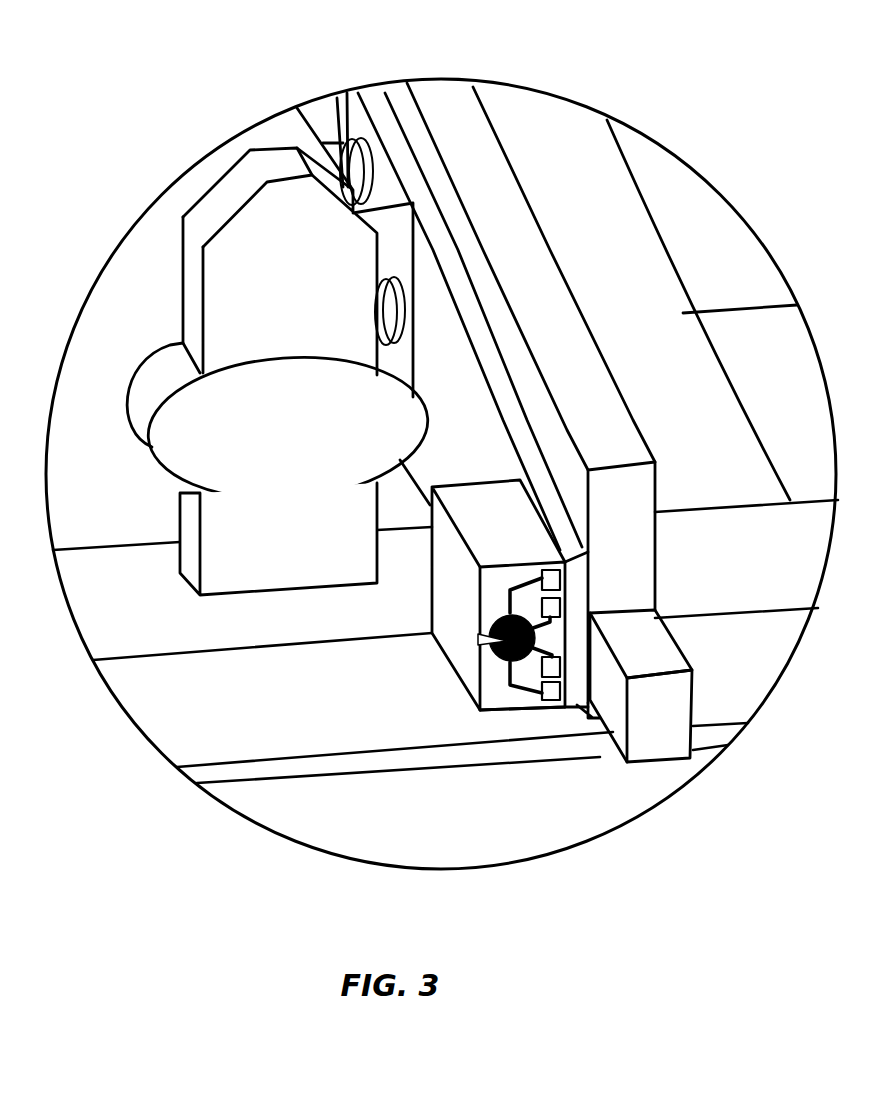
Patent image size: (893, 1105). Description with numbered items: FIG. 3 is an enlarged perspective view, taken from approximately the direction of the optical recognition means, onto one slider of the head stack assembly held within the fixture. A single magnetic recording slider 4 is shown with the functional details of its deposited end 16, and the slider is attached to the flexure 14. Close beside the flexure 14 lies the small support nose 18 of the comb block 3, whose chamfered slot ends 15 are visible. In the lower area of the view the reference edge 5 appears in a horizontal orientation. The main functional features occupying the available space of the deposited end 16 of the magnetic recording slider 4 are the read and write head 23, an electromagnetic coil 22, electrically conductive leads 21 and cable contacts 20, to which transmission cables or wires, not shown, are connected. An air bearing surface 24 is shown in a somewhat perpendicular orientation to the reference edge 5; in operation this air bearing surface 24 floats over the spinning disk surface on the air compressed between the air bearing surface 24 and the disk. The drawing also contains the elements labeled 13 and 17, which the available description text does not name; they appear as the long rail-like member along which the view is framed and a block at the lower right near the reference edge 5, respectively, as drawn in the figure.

The comb block 3 is at (160, 635).
The magnetic recording slider 4 is at (533, 710).
The reference edge 5 is at (548, 697).
The beam 13 is at (486, 177).
The flexure 14 is at (520, 445).
The chamfered slot ends 15 is at (220, 195).
The deposited end 16 is at (493, 585).
The block 17 is at (665, 723).
The support nose 18 is at (428, 418).
The cable contacts 20 is at (547, 708).
The electrically conductive leads 21 is at (500, 705).
The electromagnetic coil 22 is at (482, 648).
The read and write head 23 is at (490, 628).
The air bearing surface 24 is at (445, 612).